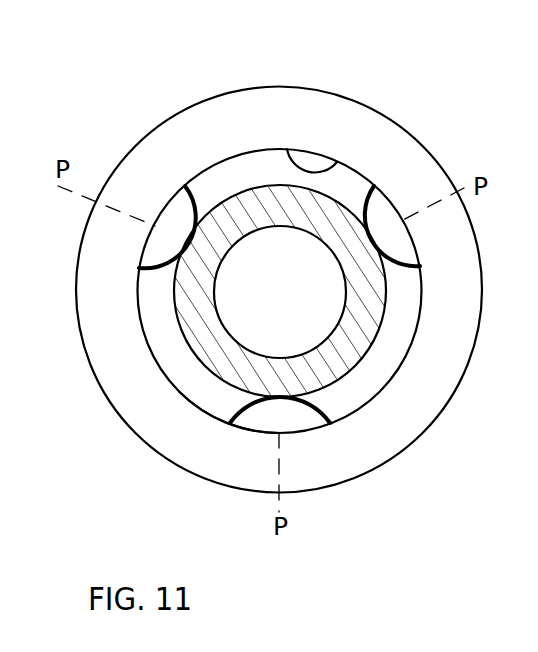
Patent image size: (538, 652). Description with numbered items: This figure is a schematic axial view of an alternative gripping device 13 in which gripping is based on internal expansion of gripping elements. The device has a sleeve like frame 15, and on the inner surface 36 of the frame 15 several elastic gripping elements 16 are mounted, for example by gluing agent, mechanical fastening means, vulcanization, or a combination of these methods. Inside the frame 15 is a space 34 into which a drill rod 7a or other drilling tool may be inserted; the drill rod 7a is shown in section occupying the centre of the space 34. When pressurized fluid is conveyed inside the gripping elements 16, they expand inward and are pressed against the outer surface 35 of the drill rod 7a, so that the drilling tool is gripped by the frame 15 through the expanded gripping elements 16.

The coupling assembly 13 is at (192, 90).
The sleeve like frame 15 is at (293, 107).
The elastic gripping elements 16 is at (178, 206).
The space 34 is at (380, 367).
The outer surface 35 is at (258, 185).
The inner surface 36 is at (337, 167).
The drill rod 7a is at (210, 340).